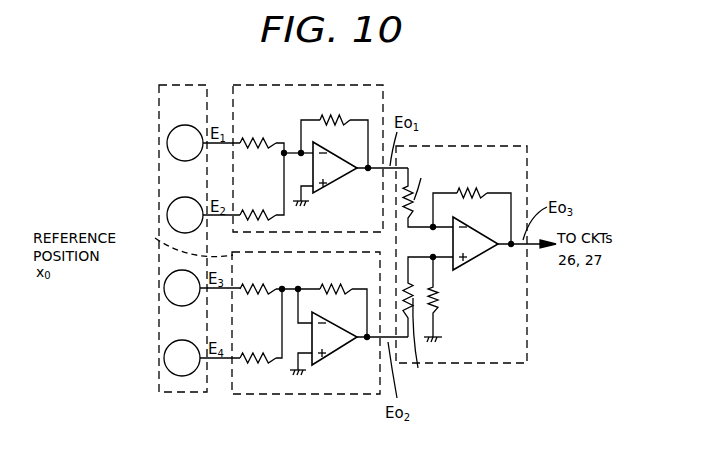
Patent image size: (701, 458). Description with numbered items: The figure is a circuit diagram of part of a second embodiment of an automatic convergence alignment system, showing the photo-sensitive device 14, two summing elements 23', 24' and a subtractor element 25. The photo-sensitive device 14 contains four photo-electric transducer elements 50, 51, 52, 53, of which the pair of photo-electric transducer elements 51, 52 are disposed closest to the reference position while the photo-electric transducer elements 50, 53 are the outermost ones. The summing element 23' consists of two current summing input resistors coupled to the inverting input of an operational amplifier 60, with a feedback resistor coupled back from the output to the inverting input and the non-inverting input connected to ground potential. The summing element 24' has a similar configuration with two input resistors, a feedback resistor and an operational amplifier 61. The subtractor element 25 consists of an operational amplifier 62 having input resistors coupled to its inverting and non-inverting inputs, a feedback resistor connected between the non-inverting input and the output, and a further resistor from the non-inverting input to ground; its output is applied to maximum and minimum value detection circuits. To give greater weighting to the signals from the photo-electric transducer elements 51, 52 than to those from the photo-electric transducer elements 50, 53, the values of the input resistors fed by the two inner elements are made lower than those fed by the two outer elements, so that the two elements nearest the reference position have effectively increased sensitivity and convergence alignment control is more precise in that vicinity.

The photo-sensitive device 14 is at (189, 85).
The summing element 23' is at (320, 145).
The summing element 24' is at (320, 344).
The subtractor element 25 is at (480, 146).
The photo-electric transducer element 50 is at (167, 143).
The photo-electric transducer element 51 is at (167, 215).
The photo-electric transducer element 52 is at (164, 288).
The photo-electric transducer element 53 is at (164, 358).
The operational amplifier 60 is at (344, 159).
The operational amplifier 61 is at (335, 350).
The operational amplifier 62 is at (487, 253).